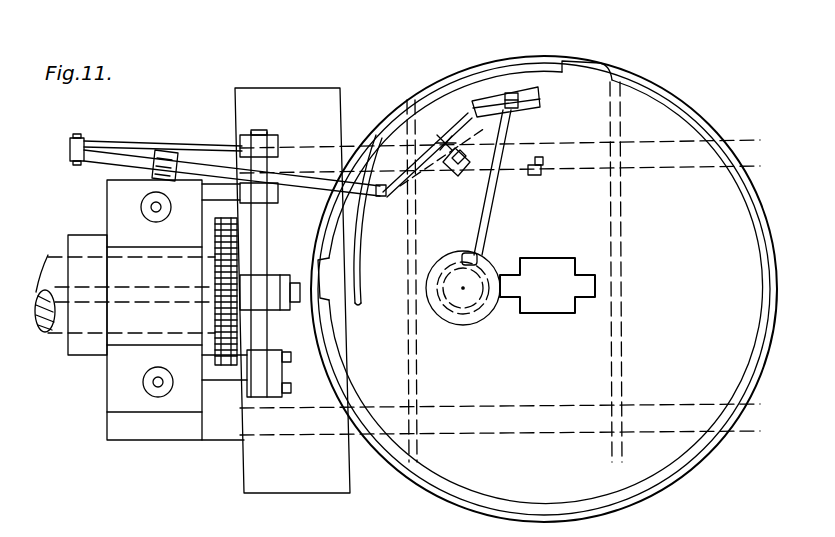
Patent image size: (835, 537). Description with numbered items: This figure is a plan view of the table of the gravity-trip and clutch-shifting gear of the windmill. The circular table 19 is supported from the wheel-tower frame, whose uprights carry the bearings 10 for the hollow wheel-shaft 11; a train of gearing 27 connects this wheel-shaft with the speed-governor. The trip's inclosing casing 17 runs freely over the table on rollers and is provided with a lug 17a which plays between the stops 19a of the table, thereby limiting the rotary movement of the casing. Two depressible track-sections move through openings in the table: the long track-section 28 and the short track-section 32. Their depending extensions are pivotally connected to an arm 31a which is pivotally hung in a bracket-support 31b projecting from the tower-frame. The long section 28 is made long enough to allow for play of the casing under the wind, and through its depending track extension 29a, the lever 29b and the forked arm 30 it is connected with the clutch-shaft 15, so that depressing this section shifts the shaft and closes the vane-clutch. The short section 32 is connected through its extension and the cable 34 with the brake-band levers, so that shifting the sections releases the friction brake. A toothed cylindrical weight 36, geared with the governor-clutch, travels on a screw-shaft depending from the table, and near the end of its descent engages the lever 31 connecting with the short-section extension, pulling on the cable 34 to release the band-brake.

The bearings 10 is at (107, 372).
The hollow wheel-shaft 11 is at (50, 262).
The clutch-shaft 15 is at (158, 296).
The inclosing casing 17 is at (414, 100).
The lug 17a is at (322, 280).
The circular table 19 is at (546, 287).
The stops 19a is at (566, 66).
The train of gearing 27 is at (222, 258).
The long track-section 28 is at (372, 240).
The depending track extension 29a is at (150, 128).
The lever 29b is at (215, 162).
The forked arm 30 is at (279, 275).
The lever 31 is at (488, 221).
The arm 31a is at (428, 166).
The bracket-support 31b is at (447, 140).
The short track-section 32 is at (536, 108).
The cable 34 is at (462, 300).
The toothed cylindrical weight 36 is at (485, 318).